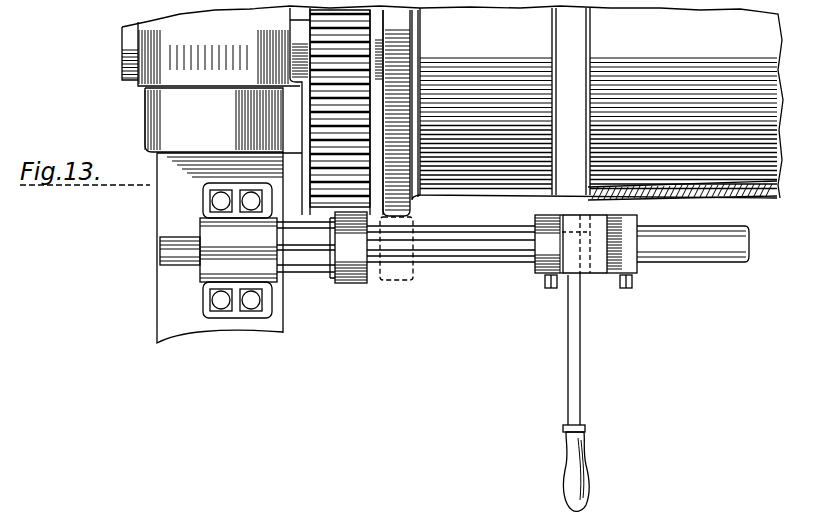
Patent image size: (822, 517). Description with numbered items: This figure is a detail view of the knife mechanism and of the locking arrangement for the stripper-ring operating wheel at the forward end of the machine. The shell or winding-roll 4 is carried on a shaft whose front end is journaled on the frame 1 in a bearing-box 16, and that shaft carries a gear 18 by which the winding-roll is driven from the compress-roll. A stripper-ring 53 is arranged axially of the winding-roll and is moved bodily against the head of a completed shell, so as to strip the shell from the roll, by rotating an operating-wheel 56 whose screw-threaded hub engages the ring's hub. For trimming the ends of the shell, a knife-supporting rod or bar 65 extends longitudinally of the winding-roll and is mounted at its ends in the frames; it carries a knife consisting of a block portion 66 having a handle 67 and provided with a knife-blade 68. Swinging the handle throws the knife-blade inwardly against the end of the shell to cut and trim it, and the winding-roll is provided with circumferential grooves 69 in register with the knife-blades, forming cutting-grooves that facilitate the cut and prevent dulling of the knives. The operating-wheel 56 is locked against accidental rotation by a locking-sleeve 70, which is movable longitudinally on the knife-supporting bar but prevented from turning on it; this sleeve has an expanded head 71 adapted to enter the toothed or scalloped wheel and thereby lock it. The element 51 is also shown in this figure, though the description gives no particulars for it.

The frame 1 is at (229, 247).
The winding-roll 4 is at (765, 35).
The bearing-box 16 is at (160, 44).
The gear 18 is at (290, 27).
The cylinder lining 51 is at (770, 188).
The stripper-ring 53 is at (594, 104).
The operating-wheel 56 is at (409, 18).
The knife-supporting rod or bar 65 is at (731, 246).
The block portion 66 is at (576, 254).
The handle 67 is at (592, 390).
The knife-blade 68 is at (587, 205).
The circumferential grooves 69 is at (583, 185).
The locking-sleeve 70 is at (307, 273).
The expanded head 71 is at (357, 273).